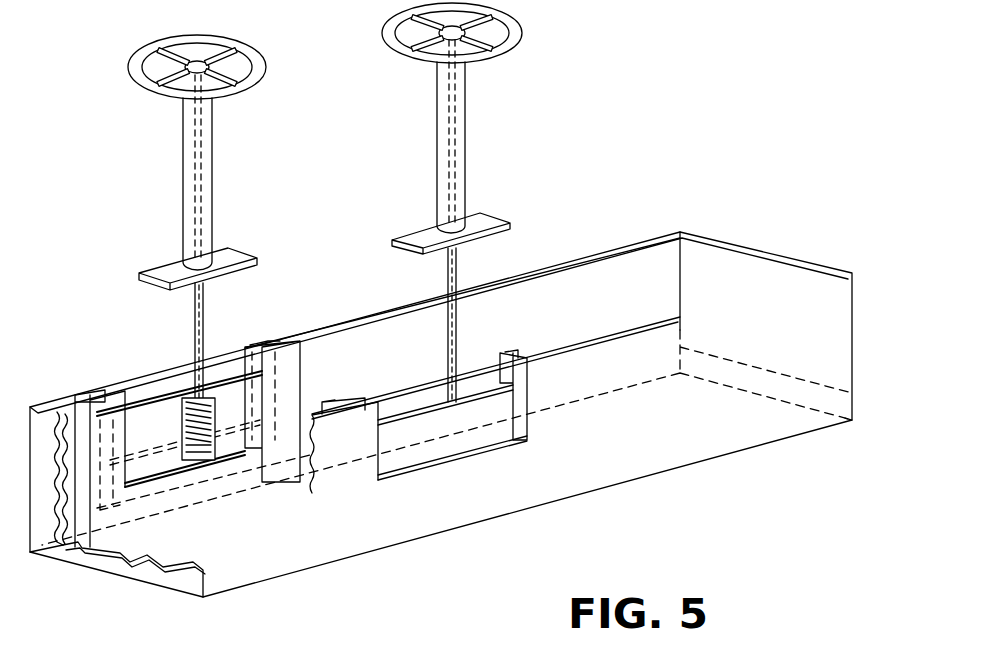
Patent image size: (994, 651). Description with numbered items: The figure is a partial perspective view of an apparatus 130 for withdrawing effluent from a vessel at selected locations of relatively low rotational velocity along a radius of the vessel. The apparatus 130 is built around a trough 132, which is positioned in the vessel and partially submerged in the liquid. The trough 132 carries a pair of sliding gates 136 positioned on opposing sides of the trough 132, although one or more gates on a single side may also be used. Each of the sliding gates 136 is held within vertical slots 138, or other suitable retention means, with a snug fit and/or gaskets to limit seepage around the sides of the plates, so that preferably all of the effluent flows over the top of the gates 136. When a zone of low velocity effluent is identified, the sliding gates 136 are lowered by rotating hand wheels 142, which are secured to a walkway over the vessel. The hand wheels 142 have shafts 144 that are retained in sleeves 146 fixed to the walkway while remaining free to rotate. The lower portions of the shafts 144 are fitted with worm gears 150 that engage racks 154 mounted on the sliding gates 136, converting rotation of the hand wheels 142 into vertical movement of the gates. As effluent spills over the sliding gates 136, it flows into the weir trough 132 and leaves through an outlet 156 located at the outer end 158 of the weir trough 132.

The apparatus 130 is at (110, 345).
The trough 132 is at (840, 341).
The sliding gates 136 is at (452, 448).
The vertical slots 138 is at (103, 393).
The hand wheels 142 is at (262, 60).
The shafts 144 is at (195, 312).
The sleeves 146 is at (212, 173).
The worm gears 150 is at (207, 387).
The racks 154 is at (182, 403).
The outlet 156 is at (837, 405).
The outer end 158 is at (733, 243).